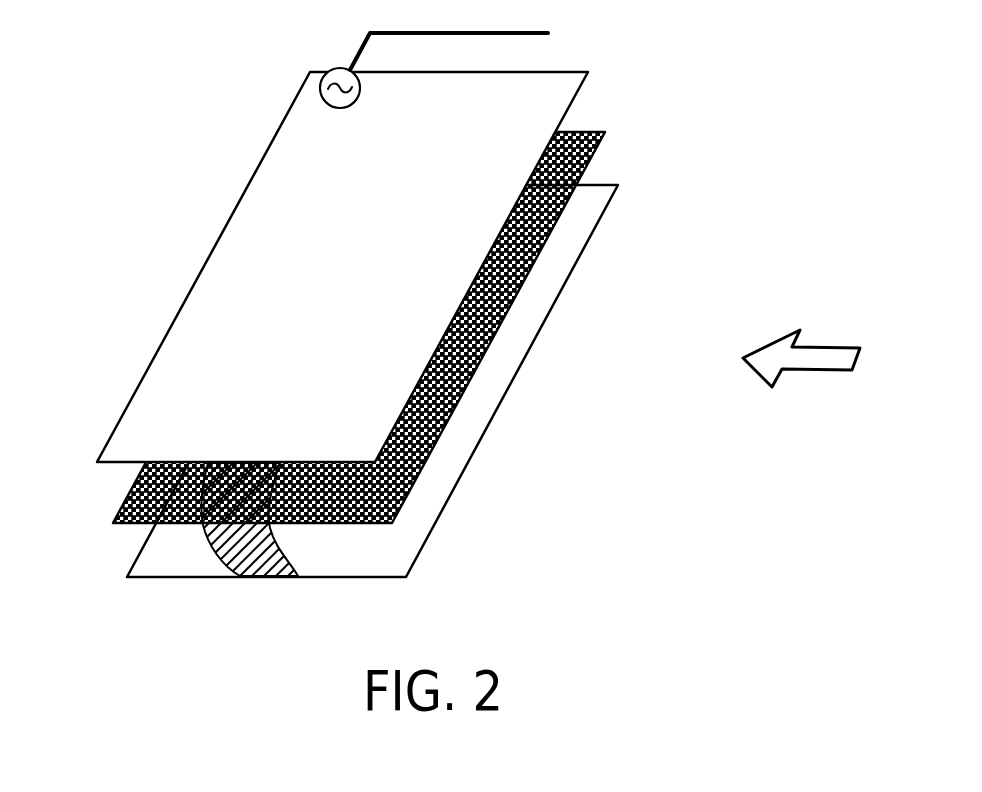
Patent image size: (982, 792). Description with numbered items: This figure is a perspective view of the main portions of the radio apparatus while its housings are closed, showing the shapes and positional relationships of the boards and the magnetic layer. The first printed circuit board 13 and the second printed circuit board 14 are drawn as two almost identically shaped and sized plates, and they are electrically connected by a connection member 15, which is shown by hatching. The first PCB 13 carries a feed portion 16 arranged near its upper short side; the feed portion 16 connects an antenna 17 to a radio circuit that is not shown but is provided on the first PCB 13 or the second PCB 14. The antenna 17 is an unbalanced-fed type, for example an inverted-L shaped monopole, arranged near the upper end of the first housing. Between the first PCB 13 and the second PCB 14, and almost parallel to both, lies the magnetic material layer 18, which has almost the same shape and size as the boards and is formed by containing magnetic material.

The first printed circuit board 13 is at (207, 257).
The second printed circuit board 14 is at (510, 383).
The connection member 15 is at (210, 560).
The feed portion 16 is at (318, 82).
The antenna 17 is at (500, 35).
The magnetic material layer 18 is at (588, 163).